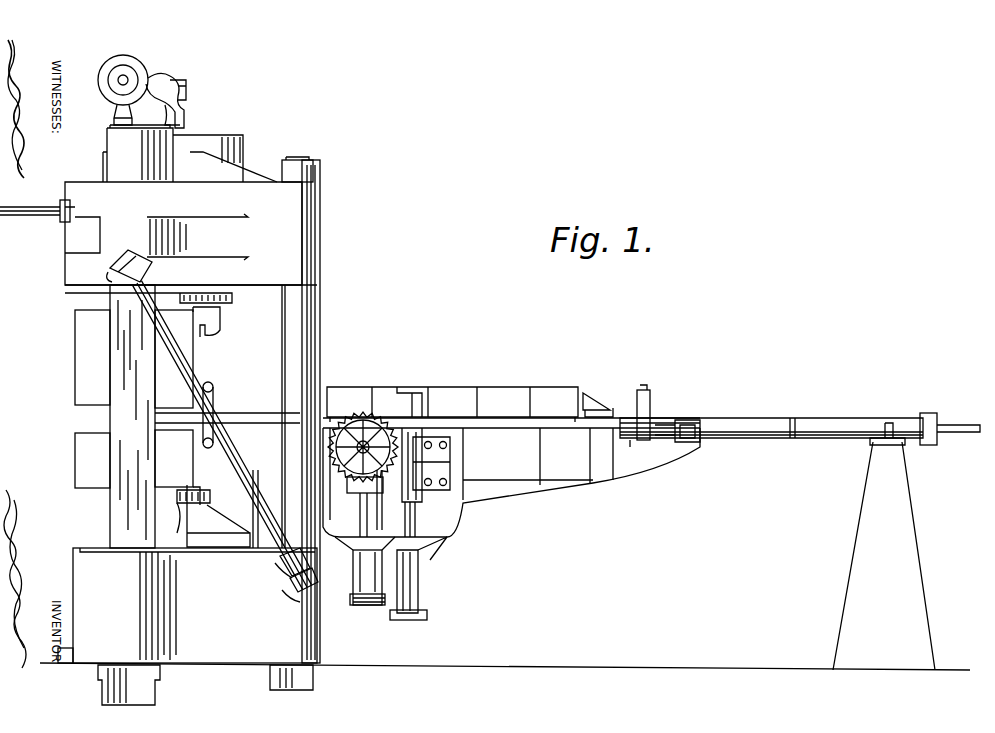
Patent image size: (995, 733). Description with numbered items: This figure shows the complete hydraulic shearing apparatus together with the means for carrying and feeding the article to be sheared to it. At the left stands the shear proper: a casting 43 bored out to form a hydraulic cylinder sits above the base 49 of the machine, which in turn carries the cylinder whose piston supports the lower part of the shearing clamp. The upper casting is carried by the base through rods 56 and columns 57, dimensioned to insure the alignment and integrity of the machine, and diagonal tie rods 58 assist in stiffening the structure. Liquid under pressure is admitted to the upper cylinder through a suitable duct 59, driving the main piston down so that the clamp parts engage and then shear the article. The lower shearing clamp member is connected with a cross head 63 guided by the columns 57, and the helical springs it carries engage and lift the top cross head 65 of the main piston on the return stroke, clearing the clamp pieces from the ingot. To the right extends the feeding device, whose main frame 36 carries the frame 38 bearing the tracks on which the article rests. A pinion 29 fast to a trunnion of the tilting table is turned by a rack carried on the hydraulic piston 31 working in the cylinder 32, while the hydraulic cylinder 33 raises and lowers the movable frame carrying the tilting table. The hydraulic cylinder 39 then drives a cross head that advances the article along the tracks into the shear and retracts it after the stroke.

The pinion 29 is at (362, 480).
The hydraulic piston 31 is at (415, 512).
The cylinder 32 is at (420, 591).
The hydraulic cylinder 33 is at (360, 580).
The main frame of the feeding device 36 is at (511, 489).
The frame 38 is at (498, 395).
The hydraulic cylinder 39 is at (805, 425).
The casting 43 is at (183, 170).
The base of the machine 49 is at (187, 626).
The rods 56 is at (315, 333).
The columns 57 is at (118, 421).
The diagonal tie rods 58 is at (206, 385).
The duct 59 is at (40, 217).
The cross head 63 is at (86, 457).
The top cross head 65 is at (86, 360).